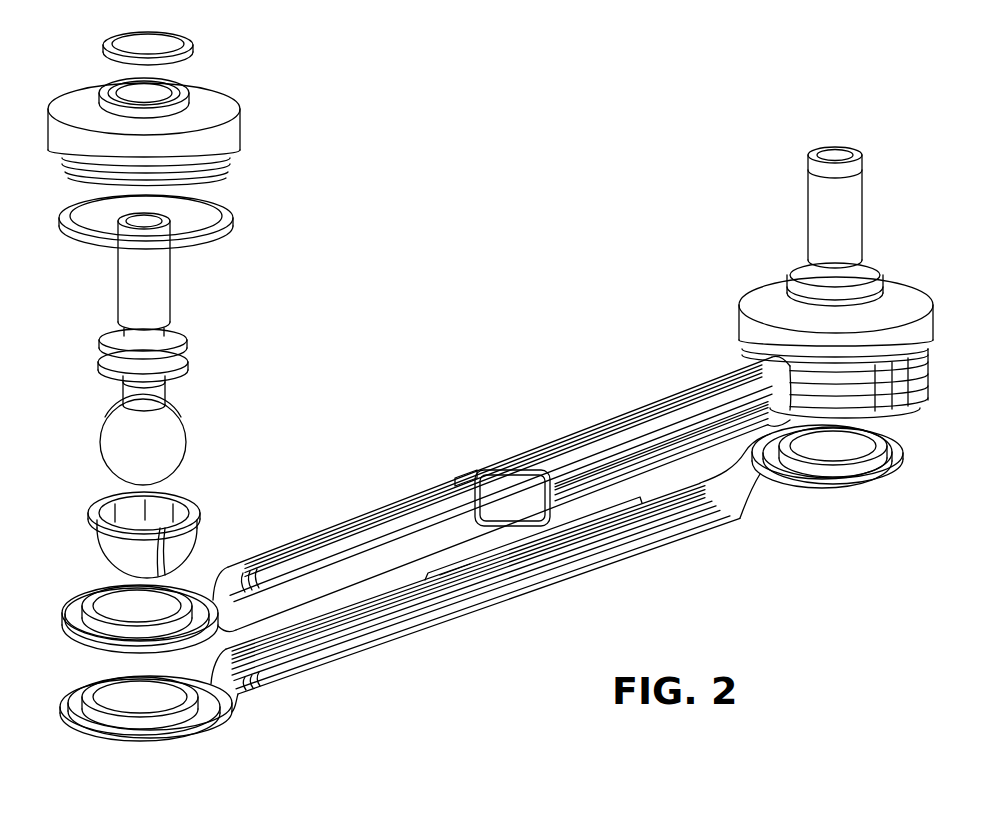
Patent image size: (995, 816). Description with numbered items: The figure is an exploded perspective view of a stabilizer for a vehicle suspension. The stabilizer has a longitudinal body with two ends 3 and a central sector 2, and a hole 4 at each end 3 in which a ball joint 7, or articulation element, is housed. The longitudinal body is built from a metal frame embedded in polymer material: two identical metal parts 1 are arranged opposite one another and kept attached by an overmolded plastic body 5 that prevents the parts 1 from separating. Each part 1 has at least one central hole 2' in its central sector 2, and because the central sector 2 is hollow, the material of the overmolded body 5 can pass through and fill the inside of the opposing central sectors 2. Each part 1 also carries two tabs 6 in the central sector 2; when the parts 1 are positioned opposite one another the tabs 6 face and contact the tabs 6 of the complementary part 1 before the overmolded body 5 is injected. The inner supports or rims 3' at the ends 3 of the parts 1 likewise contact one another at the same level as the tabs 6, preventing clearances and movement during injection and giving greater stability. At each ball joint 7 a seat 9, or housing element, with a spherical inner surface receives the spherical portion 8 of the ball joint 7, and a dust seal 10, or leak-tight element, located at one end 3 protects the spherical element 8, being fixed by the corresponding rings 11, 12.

The metal part 1 is at (382, 505).
The central sector 2 is at (500, 532).
The central hole 2' is at (533, 528).
The end 3 is at (505, 536).
The inner support or rim 3' is at (485, 600).
The hole 4 is at (120, 623).
The overmolded plastic body 5 is at (627, 412).
The tab 6 is at (508, 503).
The ball joint 7 is at (202, 347).
The spherical portion 8 is at (163, 453).
The seat 9 is at (177, 550).
The dust seal 10 is at (228, 132).
The ring 11 is at (225, 220).
The ring 12 is at (193, 47).